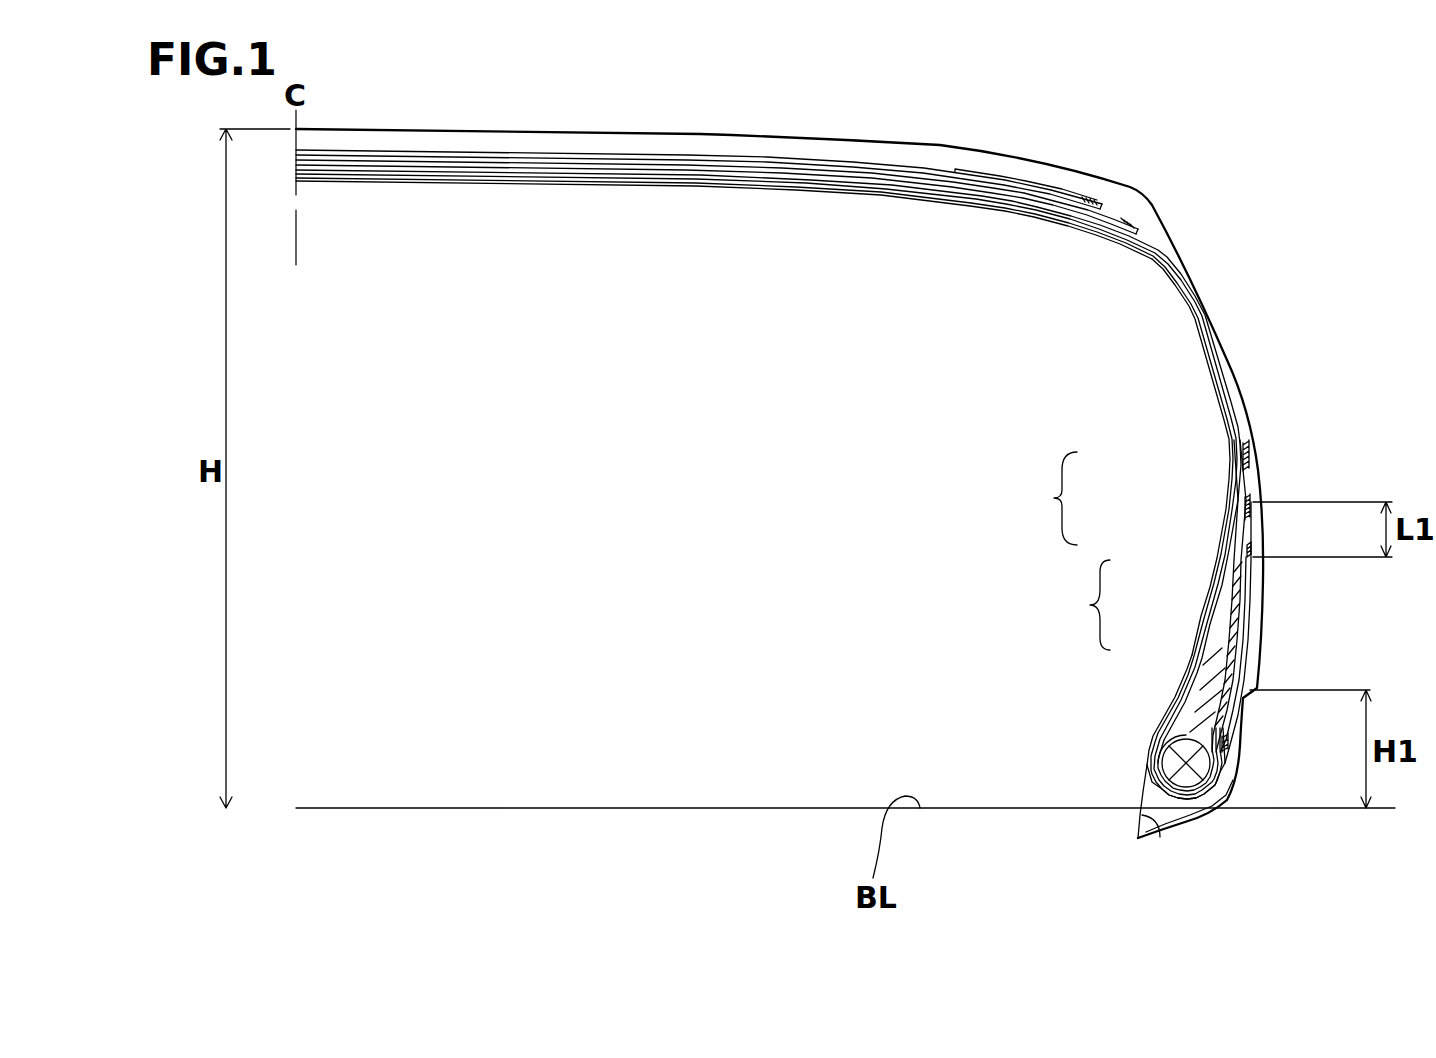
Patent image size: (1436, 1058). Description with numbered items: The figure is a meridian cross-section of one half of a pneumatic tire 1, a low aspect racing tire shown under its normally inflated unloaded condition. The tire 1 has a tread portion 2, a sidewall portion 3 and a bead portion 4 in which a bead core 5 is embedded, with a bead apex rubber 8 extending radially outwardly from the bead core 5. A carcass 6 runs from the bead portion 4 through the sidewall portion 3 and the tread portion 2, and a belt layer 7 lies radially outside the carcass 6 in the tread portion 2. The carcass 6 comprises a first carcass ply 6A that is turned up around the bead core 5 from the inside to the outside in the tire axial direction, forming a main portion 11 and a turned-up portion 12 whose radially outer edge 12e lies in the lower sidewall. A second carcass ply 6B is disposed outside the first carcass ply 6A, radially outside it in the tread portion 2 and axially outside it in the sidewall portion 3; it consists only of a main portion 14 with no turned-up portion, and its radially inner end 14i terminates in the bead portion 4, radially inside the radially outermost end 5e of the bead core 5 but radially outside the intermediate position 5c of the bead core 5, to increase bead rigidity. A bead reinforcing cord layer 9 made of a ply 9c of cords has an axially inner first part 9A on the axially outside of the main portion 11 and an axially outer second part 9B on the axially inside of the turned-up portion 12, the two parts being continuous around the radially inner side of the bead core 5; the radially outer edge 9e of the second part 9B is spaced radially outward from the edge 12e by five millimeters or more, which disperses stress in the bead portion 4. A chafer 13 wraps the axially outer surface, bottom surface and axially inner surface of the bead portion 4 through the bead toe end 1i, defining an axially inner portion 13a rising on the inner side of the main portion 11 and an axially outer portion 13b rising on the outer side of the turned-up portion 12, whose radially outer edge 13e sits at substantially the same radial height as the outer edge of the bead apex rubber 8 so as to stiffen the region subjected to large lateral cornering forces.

The pneumatic tire 1 is at (1293, 158).
The bead toe end 1i is at (1140, 843).
The tread portion 2 is at (865, 118).
The sidewall portion 3 is at (1295, 426).
The bead portion 4 is at (1232, 829).
The bead core 5 is at (1170, 763).
The intermediate position of the bead core 5c is at (1172, 775).
The radially outermost end of the bead core 5e is at (1172, 731).
The carcass 6 is at (762, 192).
The first carcass ply 6A is at (1147, 654).
The second carcass ply 6B is at (878, 183).
The belt layer 7 is at (607, 160).
The bead apex rubber 8 is at (1192, 718).
The bead reinforcing cord layer 9 is at (1235, 461).
The axially inner first part 9A is at (1237, 520).
The axially outer second part 9B is at (1243, 545).
The ply of cords 9c is at (1133, 492).
The radially outer edge of the axially outer second part 9e is at (1252, 497).
The main portion 11 is at (1222, 596).
The turned-up portion 12 is at (1220, 646).
The radially outer edge of the carcass ply turned-up portion 12e is at (1248, 553).
The chafer 13 is at (1260, 912).
The axially inner portion of the chafer 13a is at (1146, 824).
The axially outer portion of the chafer 13b is at (1178, 826).
The radially outer edge of the axially outer chafer portion 13e is at (1243, 686).
The main portion of the second carcass ply 14 is at (1254, 607).
The radially inner end of the second carcass ply 14i is at (1228, 746).